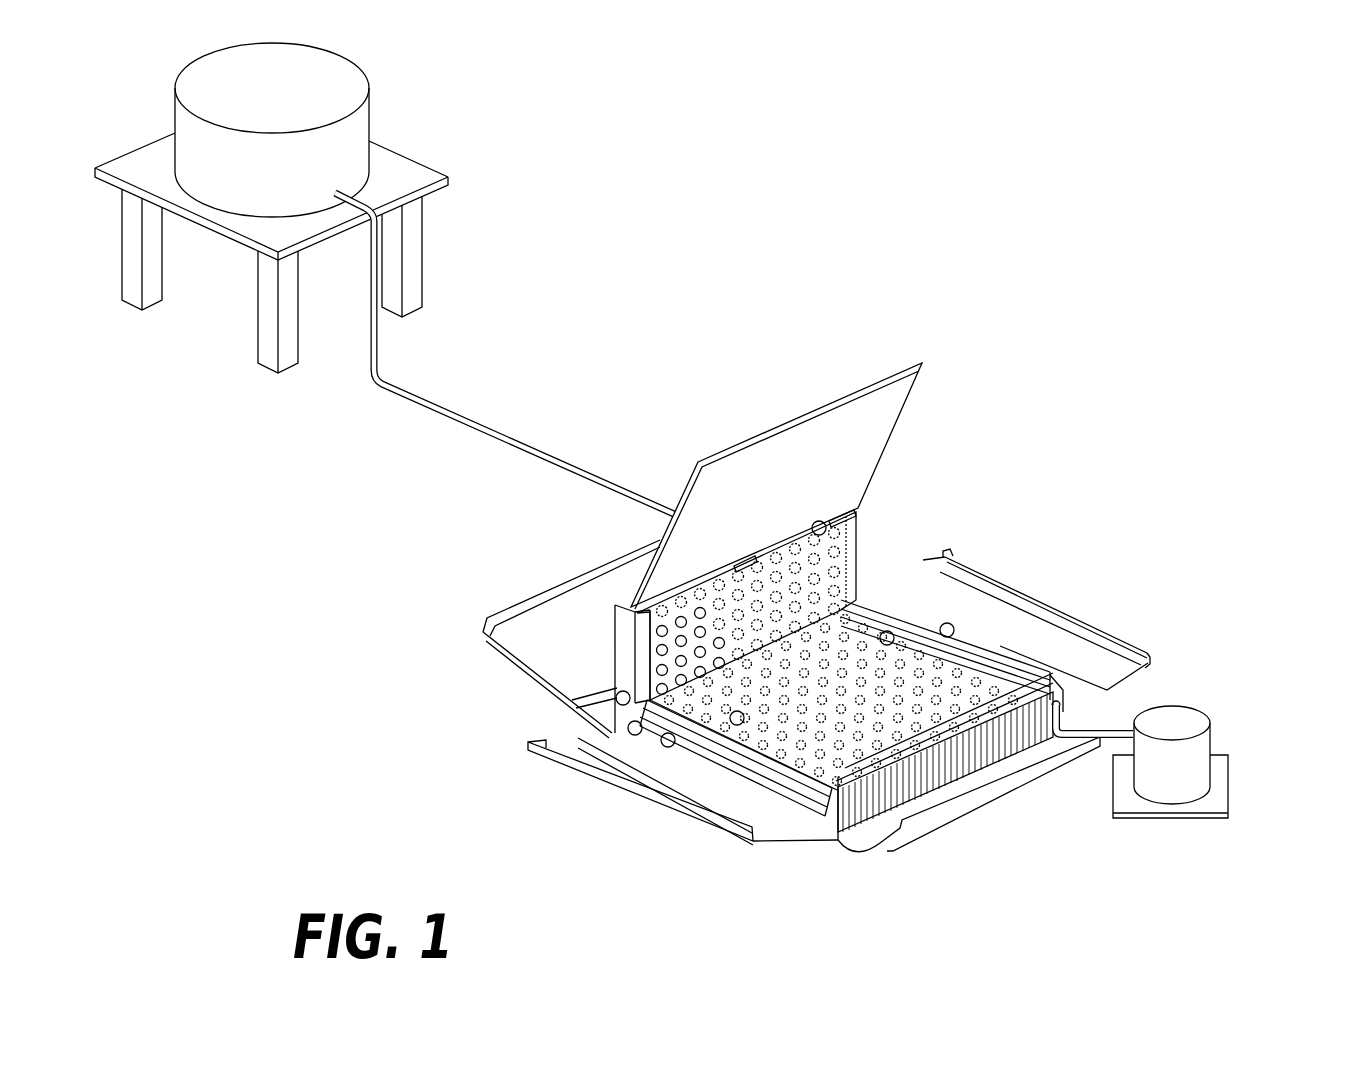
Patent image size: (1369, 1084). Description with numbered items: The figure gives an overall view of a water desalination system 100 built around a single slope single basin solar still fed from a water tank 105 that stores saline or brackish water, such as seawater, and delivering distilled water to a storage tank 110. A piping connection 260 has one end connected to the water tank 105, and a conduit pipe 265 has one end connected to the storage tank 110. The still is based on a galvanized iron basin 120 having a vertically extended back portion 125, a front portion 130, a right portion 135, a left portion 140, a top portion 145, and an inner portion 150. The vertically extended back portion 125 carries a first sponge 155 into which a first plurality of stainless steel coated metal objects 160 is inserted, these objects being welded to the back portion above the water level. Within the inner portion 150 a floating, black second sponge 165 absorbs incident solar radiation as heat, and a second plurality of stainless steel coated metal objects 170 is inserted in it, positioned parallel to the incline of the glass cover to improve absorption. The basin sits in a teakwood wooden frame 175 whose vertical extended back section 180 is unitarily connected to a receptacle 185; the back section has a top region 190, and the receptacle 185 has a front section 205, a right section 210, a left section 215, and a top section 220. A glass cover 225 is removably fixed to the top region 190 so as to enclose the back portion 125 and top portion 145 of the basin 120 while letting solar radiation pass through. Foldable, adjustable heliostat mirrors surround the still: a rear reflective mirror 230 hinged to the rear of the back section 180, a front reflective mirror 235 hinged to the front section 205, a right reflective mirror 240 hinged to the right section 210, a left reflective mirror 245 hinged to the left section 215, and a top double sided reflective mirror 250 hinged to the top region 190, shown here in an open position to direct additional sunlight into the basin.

The water desalination system 100 is at (918, 101).
The water tank 105 is at (334, 130).
The storage tank 110 is at (1225, 743).
The basin 120 is at (890, 631).
The vertically extended back portion 125 is at (641, 638).
The front portion 130 is at (859, 749).
The right portion 135 is at (1071, 694).
The left portion 140 is at (771, 764).
The top portion 145 is at (912, 757).
The inner portion 150 is at (731, 723).
The first sponge 155 is at (654, 668).
The first plurality of stainless steel coated metal objects 160 is at (1011, 686).
The second sponge 165 is at (957, 714).
The second plurality of stainless steel coated metal objects 170 is at (972, 698).
The wooden frame 175 is at (628, 729).
The vertical extended back section 180 is at (620, 689).
The receptacle 185 is at (661, 744).
The top region 190 is at (607, 594).
The front section 205 is at (874, 801).
The right section 210 is at (1084, 690).
The left section 215 is at (794, 804).
The top section 220 is at (831, 796).
The glass cover 225 is at (951, 624).
The rear reflective mirror 230 is at (515, 590).
The front reflective mirror 235 is at (934, 835).
The right reflective mirror 240 is at (1106, 617).
The left reflective mirror 245 is at (727, 842).
The top double sided reflective mirror 250 is at (895, 366).
The piping connection 260 is at (433, 419).
The conduit pipe 265 is at (1115, 719).